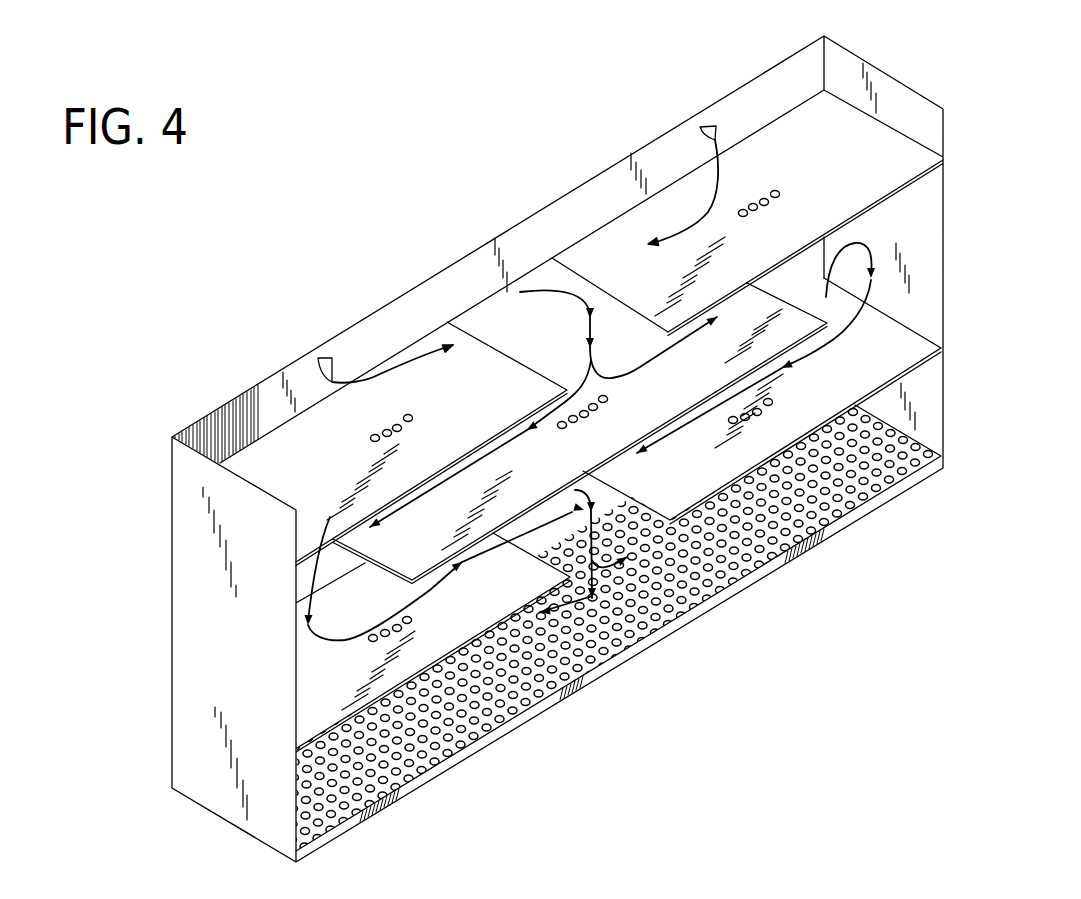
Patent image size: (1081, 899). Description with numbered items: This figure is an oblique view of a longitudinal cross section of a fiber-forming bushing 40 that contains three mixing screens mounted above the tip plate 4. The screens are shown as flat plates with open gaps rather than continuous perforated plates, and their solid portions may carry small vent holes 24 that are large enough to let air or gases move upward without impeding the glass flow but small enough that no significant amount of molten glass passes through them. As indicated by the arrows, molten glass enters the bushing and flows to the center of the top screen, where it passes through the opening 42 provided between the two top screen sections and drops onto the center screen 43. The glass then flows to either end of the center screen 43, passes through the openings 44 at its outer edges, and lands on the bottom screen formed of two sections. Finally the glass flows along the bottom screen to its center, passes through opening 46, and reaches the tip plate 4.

The tip plate 4 is at (737, 578).
The vent holes 24 is at (765, 192).
The fiber-forming bushing 40 is at (172, 489).
The opening 42 is at (510, 298).
The center screen 43 is at (448, 518).
The openings 44 is at (357, 585).
The opening 46 is at (585, 492).